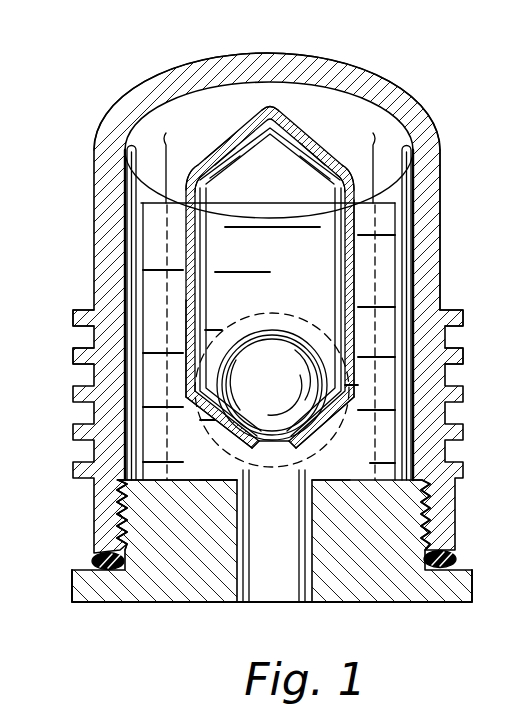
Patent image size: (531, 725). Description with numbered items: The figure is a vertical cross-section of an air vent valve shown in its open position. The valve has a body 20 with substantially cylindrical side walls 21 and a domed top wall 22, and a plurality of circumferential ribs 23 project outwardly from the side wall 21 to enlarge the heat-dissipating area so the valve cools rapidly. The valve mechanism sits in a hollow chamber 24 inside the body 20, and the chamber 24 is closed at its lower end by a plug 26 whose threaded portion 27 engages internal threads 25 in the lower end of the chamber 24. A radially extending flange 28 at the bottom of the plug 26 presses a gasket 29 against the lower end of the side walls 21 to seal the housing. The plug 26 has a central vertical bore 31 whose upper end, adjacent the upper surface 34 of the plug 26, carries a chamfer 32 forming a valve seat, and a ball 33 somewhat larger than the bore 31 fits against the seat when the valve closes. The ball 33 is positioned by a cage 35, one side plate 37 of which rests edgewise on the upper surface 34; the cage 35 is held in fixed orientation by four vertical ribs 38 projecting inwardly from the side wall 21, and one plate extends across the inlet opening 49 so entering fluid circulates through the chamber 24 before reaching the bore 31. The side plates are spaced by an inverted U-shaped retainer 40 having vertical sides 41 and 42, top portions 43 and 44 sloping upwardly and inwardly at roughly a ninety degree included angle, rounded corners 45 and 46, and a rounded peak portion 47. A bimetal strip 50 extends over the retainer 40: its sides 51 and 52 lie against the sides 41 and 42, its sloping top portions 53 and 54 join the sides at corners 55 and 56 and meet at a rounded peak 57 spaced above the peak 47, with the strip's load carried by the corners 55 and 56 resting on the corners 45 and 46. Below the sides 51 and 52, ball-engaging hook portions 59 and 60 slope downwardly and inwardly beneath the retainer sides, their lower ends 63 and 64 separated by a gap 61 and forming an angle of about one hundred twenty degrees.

The body 20 is at (93, 247).
The side walls 21 is at (442, 172).
The domed top wall 22 is at (352, 100).
The circumferential ribs 23 is at (73, 395).
The hollow chamber 24 is at (392, 108).
The internal threads 25 is at (122, 527).
The plug 26 is at (368, 590).
The threaded portion 27 is at (120, 487).
The radially extending flange 28 is at (72, 587).
The gasket 29 is at (90, 560).
The vertical bore 31 is at (239, 595).
The chamfer 32 is at (242, 479).
The ball 33 is at (238, 383).
The upper surface 34 is at (352, 479).
The cage 35 is at (389, 299).
The side plate 37 is at (143, 288).
The vertical ribs 38 is at (148, 172).
The retainer 40 is at (222, 172).
The retainer side 41 is at (207, 278).
The retainer side 42 is at (337, 287).
The top portion 43 is at (228, 158).
The top portion 44 is at (312, 158).
The rounded corner 45 is at (208, 188).
The rounded corner 46 is at (328, 178).
The rounded peak portion 47 is at (270, 138).
The inlet opening 49 is at (283, 312).
The bimetal strip 50 is at (229, 129).
The bimetal strip side 51 is at (192, 318).
The bimetal strip side 52 is at (347, 240).
The sloping top portion 53 is at (218, 147).
The sloping top portion 54 is at (306, 138).
The corner 55 is at (202, 190).
The corner 56 is at (346, 170).
The rounded peak 57 is at (272, 112).
The ball-engaging hook portion 59 is at (210, 417).
The ball-engaging hook portion 60 is at (340, 422).
The gap 61 is at (280, 448).
The lower end of hook portion 63 is at (257, 442).
The lower end of hook portion 64 is at (295, 444).